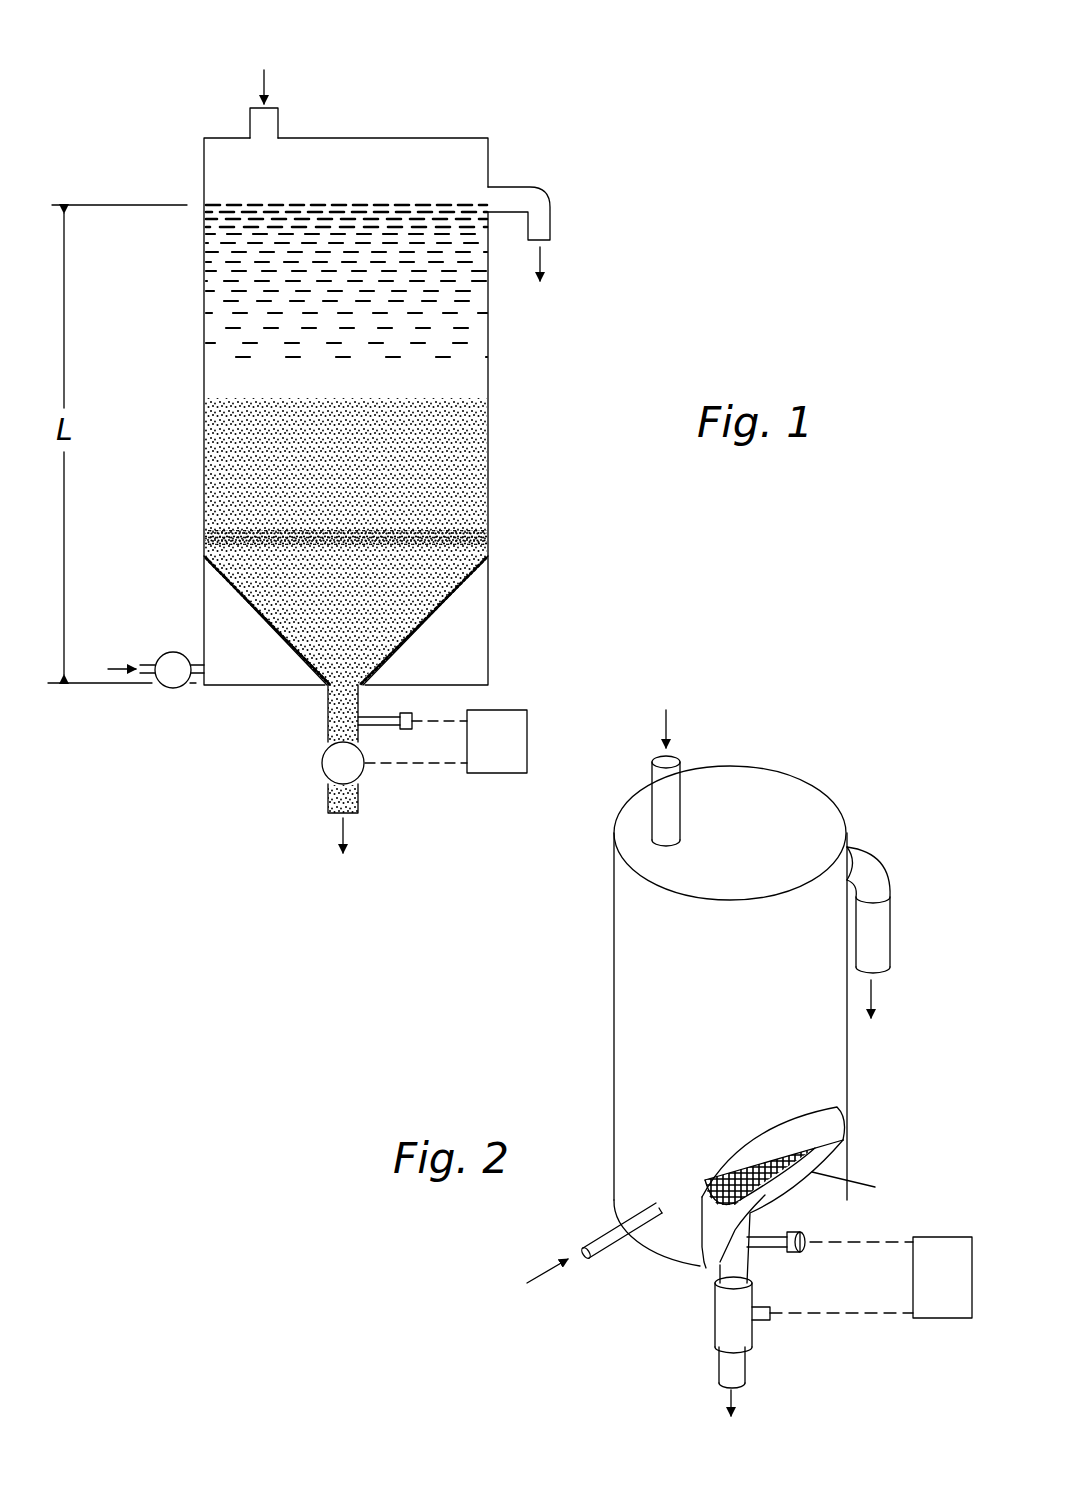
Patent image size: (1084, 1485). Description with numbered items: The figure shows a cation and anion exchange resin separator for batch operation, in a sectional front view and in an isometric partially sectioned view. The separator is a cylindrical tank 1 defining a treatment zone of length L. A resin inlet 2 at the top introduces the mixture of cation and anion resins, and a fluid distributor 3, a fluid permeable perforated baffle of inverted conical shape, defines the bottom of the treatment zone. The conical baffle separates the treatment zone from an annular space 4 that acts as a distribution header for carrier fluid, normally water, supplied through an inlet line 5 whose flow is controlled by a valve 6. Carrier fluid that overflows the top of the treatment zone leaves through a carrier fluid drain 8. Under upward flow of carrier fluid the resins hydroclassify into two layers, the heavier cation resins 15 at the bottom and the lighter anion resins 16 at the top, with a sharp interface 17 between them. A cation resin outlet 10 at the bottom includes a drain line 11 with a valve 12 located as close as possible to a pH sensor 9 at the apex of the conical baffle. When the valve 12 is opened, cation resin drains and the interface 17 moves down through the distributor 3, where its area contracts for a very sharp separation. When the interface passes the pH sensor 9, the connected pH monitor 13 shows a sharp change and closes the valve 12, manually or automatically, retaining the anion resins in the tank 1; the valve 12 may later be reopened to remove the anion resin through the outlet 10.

In FIG. 1, the cylindrical tank 1 is at (488, 349).
In FIG. 2, the cylindrical tank 1 is at (612, 983).
In FIG. 1, the resin inlet 2 is at (278, 119).
In FIG. 2, the resin inlet 2 is at (680, 762).
In FIG. 1, the fluid distributor 3 is at (430, 620).
In FIG. 2, the fluid distributor 3 is at (830, 1150).
In FIG. 1, the annular space 4 is at (250, 664).
In FIG. 2, the annular space 4 is at (898, 1190).
In FIG. 1, the inlet line 5 is at (148, 660).
In FIG. 2, the inlet line 5 is at (590, 1240).
In FIG. 1, the valve 6 is at (177, 688).
In FIG. 1, the carrier fluid drain 8 is at (552, 212).
In FIG. 2, the carrier fluid drain 8 is at (892, 923).
In FIG. 1, the pH sensor 9 is at (425, 704).
In FIG. 2, the pH sensor 9 is at (800, 1255).
In FIG. 1, the cation resin outlet 10 is at (328, 698).
In FIG. 1, the drain line 11 is at (358, 808).
In FIG. 2, the drain line 11 is at (745, 1367).
In FIG. 1, the valve 12 is at (322, 766).
In FIG. 2, the valve 12 is at (715, 1329).
In FIG. 1, the pH monitor 13 is at (527, 740).
In FIG. 2, the pH monitor 13 is at (935, 1320).
In FIG. 1, the cation resins 15 is at (488, 558).
In FIG. 1, the anion resins 16 is at (488, 443).
In FIG. 1, the interface 17 is at (488, 537).